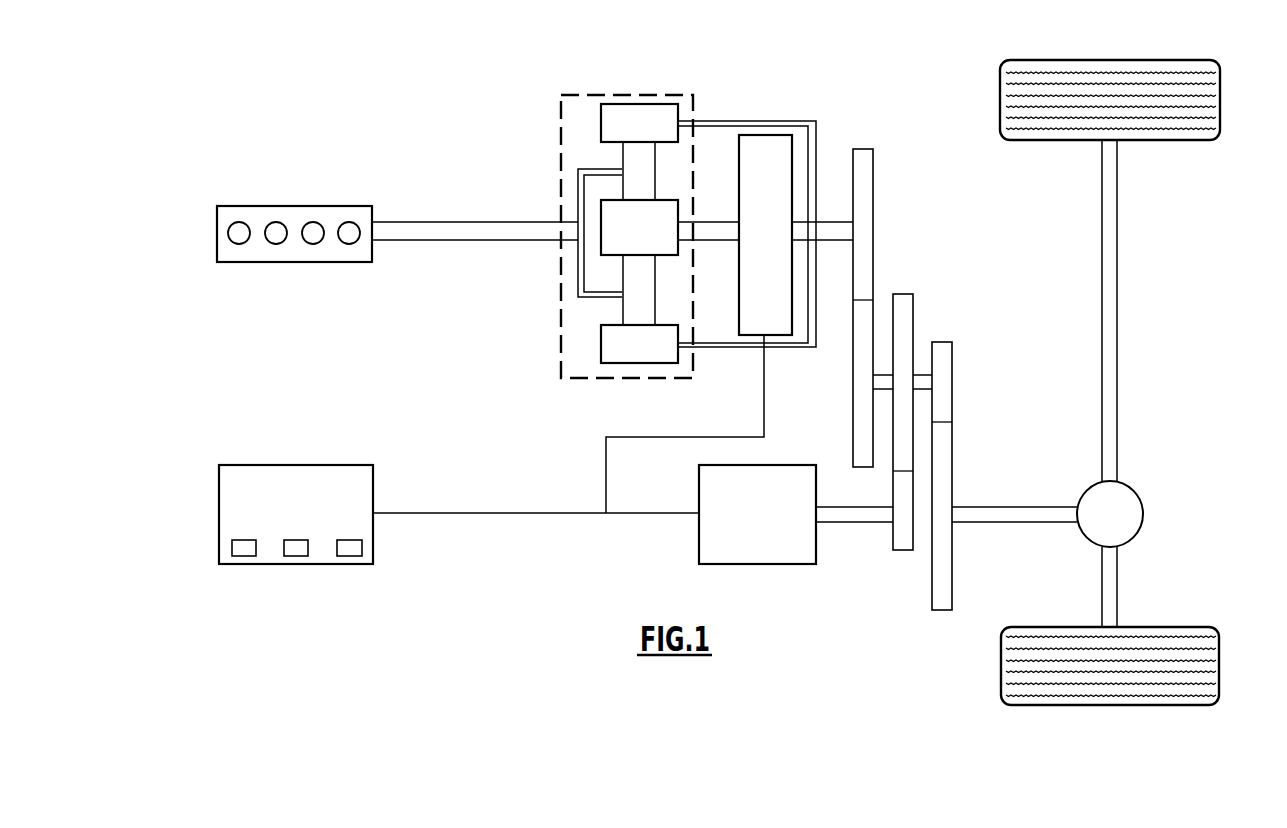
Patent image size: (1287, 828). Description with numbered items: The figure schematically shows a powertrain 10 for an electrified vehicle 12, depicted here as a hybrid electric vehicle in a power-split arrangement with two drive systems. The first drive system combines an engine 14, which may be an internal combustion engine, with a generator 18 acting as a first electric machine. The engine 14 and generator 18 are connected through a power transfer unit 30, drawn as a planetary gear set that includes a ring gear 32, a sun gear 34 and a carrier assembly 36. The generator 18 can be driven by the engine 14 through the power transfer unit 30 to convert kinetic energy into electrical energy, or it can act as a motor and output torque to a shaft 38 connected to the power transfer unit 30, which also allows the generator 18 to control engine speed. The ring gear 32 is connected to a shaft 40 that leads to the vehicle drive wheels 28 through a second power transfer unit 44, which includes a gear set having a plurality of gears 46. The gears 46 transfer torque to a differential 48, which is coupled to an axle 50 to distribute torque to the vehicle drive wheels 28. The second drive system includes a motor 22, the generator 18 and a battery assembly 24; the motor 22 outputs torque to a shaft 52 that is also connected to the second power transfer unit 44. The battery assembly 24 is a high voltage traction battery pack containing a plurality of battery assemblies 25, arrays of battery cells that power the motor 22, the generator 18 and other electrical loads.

The powertrain 10 is at (427, 122).
The electrified vehicle 12 is at (781, 60).
The engine 14 is at (234, 206).
The generator 18 is at (743, 135).
The motor 22 is at (816, 550).
The battery assembly 24 is at (234, 465).
The battery assemblies 25 is at (256, 548).
The vehicle drive wheels 28 is at (1219, 662).
The power transfer unit 30 is at (560, 338).
The ring gear 32 is at (601, 121).
The sun gear 34 is at (601, 207).
The carrier assembly 36 is at (578, 283).
The shaft 38 is at (709, 221).
The shaft 40 is at (832, 222).
The second power transfer unit 44 is at (934, 263).
The gears 46 is at (873, 267).
The differential 48 is at (1138, 530).
The axle 50 is at (1117, 302).
The shaft 52 is at (864, 522).